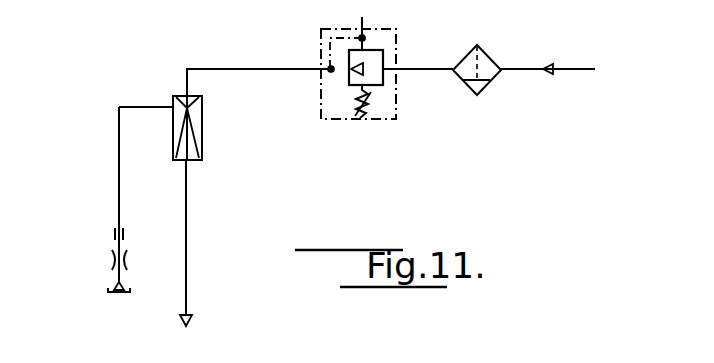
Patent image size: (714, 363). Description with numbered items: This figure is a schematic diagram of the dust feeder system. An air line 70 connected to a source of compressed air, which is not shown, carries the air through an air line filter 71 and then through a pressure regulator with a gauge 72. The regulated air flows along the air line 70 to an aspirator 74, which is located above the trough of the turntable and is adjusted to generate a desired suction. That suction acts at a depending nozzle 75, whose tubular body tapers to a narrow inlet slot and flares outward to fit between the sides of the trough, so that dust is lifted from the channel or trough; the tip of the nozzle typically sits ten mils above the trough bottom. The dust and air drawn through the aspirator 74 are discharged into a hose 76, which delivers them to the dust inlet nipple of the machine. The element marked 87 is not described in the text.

The air line 70 is at (518, 69).
The air line filter 71 is at (465, 85).
The pressure regulator with a gauge 72 is at (322, 93).
The aspirator 74 is at (178, 108).
The nozzle 75 is at (112, 262).
The hose 76 is at (185, 248).
The nozzle 87 is at (108, 291).